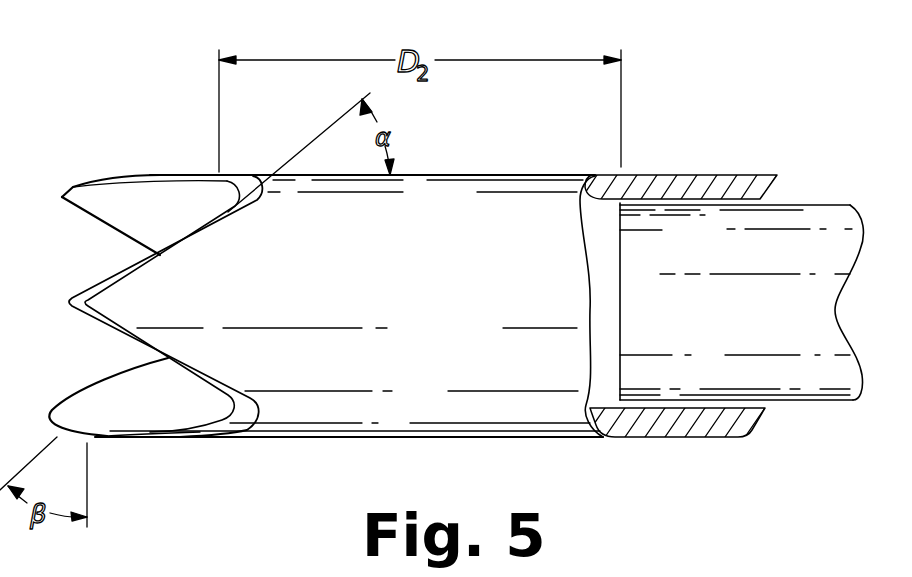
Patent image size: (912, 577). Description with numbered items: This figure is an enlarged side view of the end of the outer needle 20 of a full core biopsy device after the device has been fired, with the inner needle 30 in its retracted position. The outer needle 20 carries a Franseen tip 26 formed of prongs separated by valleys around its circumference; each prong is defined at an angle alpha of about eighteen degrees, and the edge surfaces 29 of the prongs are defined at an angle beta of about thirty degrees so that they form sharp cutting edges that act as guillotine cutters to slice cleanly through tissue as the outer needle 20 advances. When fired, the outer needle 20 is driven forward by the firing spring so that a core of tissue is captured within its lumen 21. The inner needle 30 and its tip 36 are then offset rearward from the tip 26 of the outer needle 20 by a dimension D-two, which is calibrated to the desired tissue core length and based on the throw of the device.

The outer needle 20 is at (511, 173).
The lumen 21 is at (603, 198).
The tip 26 is at (108, 179).
The edge surfaces 29 is at (115, 418).
The inner needle 30 is at (812, 203).
The tip 36 is at (620, 355).